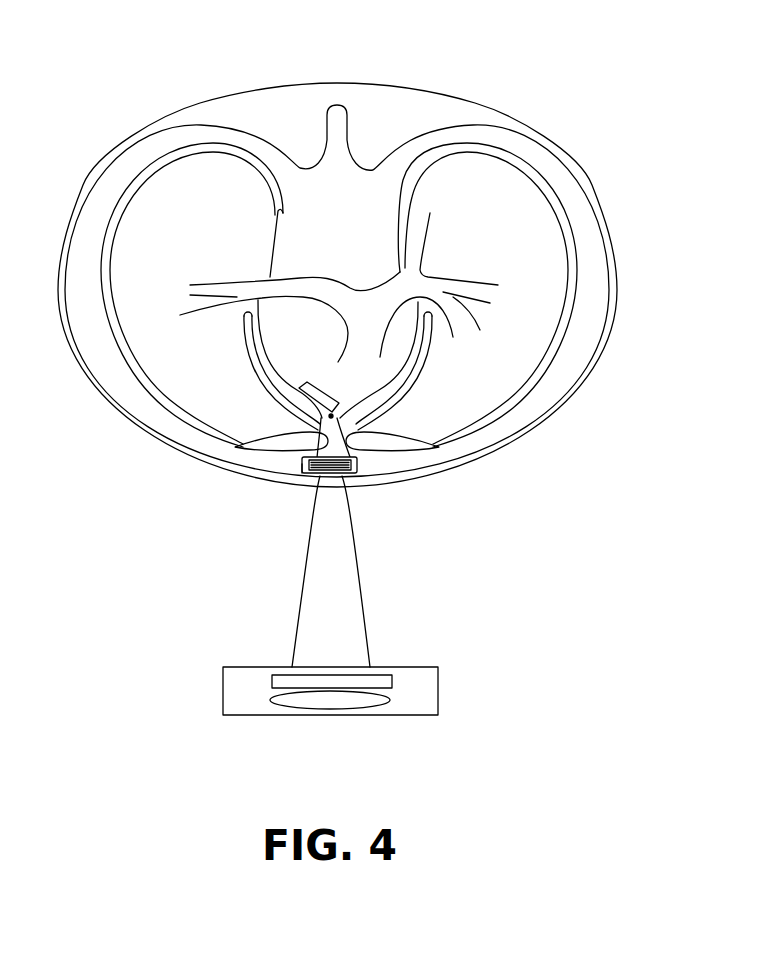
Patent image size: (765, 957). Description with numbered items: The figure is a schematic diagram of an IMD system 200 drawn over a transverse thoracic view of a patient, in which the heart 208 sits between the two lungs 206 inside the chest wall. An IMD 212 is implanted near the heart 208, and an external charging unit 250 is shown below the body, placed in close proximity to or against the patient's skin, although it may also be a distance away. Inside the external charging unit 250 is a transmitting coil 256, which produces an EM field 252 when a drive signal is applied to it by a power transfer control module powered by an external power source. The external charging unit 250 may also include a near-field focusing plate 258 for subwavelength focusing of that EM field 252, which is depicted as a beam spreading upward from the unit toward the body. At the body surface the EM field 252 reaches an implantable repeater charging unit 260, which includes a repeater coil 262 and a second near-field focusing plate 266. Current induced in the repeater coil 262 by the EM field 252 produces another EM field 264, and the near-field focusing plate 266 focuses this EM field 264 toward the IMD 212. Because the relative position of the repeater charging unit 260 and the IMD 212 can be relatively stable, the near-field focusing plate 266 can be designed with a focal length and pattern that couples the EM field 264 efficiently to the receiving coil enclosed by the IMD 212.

The IMD system 200 is at (355, 21).
The lungs 206 is at (154, 394).
The heart 208 is at (299, 316).
The IMD 212 is at (299, 388).
The external charging unit 250 is at (223, 697).
The EM field 252 is at (290, 643).
The transmitting coil 256 is at (330, 712).
The near-field focusing plate 258 is at (393, 680).
The implantable repeater charging unit 260 is at (357, 473).
The repeater coil 262 is at (302, 473).
The EM field 264 is at (246, 449).
The near-field focusing plate 266 is at (363, 450).